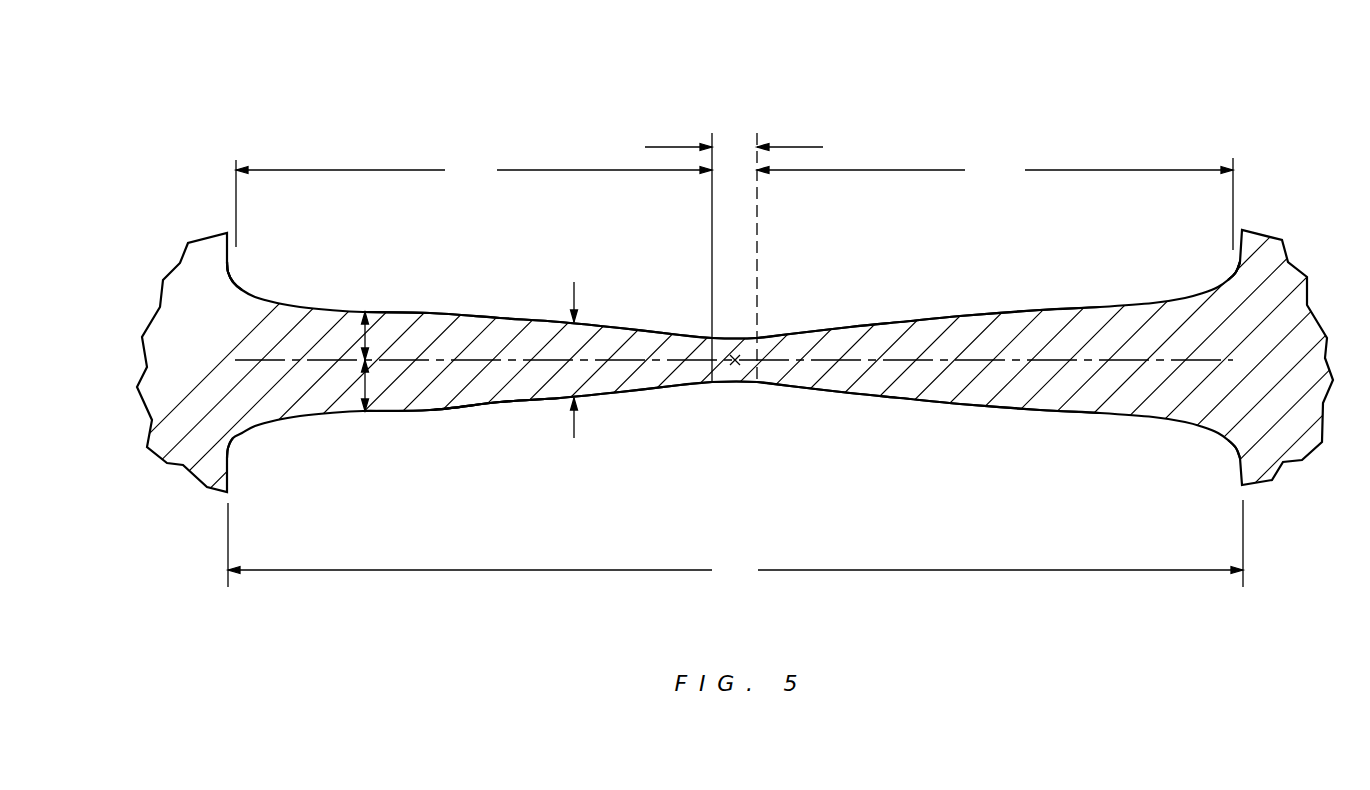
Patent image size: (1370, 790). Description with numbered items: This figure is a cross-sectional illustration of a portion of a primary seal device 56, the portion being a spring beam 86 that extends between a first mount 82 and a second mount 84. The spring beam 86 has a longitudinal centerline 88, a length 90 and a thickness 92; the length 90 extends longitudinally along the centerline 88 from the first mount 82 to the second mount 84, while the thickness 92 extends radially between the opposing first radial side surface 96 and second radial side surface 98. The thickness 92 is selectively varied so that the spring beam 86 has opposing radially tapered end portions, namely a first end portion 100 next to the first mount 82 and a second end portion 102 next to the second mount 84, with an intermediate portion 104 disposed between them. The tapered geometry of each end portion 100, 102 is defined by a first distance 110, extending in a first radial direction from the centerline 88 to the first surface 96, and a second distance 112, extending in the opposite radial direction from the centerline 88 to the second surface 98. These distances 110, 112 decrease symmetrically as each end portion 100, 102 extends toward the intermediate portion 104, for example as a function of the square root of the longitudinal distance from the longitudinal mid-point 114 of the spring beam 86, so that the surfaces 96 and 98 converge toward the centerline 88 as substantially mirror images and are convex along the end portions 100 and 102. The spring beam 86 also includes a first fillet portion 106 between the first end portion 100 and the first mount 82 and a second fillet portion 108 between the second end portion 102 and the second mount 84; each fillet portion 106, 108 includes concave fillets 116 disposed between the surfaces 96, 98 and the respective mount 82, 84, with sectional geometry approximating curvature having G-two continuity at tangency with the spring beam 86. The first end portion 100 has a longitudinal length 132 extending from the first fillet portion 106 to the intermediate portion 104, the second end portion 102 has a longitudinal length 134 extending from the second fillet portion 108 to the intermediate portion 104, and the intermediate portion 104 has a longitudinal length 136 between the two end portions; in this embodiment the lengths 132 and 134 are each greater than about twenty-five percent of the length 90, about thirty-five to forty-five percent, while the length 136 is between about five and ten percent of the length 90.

The primary seal device 56 is at (1167, 106).
The first mount 82 is at (192, 262).
The second mount 84 is at (1283, 241).
The spring beam 86 is at (505, 470).
The longitudinal centerline 88 is at (1032, 363).
The length 90 is at (735, 543).
The thickness 92 is at (574, 420).
The first radial side surface 96 is at (310, 420).
The second radial side surface 98 is at (316, 305).
The first end portion 100 is at (463, 305).
The second end portion 102 is at (977, 305).
The intermediate portion 104 is at (740, 315).
The first fillet portion 106 is at (236, 257).
The second fillet portion 108 is at (1234, 257).
The first distance 110 is at (366, 386).
The second distance 112 is at (366, 337).
The longitudinal mid-point 114 is at (735, 368).
The fillet 116 is at (238, 276).
The longitudinal length 132 is at (474, 257).
The longitudinal length 134 is at (995, 257).
The longitudinal length 136 is at (795, 142).